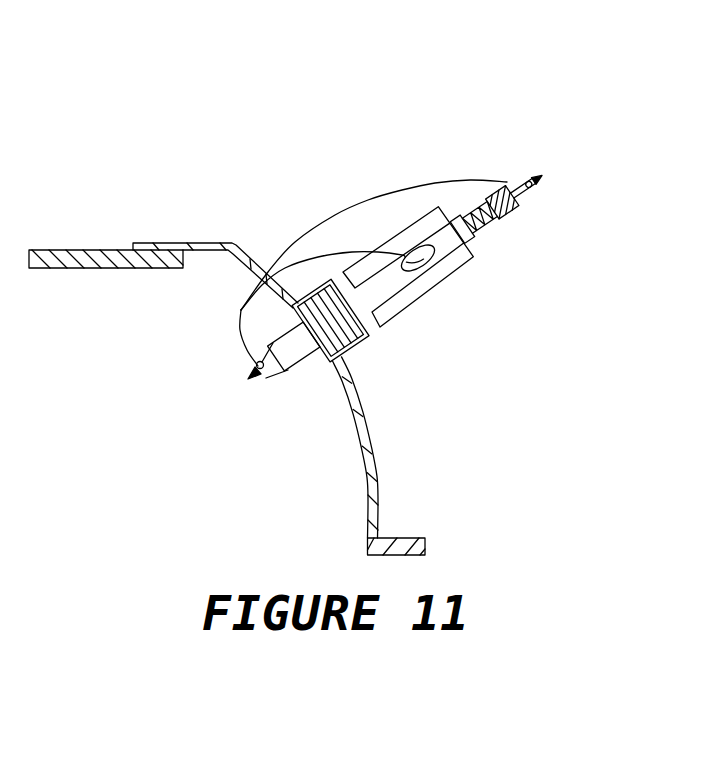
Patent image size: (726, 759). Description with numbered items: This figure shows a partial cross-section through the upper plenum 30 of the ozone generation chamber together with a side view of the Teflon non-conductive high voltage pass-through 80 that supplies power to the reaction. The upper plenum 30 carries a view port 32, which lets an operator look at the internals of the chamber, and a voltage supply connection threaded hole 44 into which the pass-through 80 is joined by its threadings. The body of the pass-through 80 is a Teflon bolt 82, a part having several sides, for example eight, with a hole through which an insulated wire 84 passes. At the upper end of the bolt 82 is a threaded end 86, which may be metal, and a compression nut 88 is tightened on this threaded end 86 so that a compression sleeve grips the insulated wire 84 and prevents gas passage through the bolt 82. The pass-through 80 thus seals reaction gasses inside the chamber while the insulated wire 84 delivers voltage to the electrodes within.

The high voltage pass-through 80 is at (359, 86).
The view port 32 is at (80, 248).
The upper plenum 30 is at (215, 247).
The Teflon non-conductive material bolt 82 is at (455, 262).
The insulated wire 84 is at (241, 310).
The threaded end 86 is at (473, 235).
The compression nut 88 is at (492, 190).
The voltage supply connection threaded hole 44 is at (347, 353).